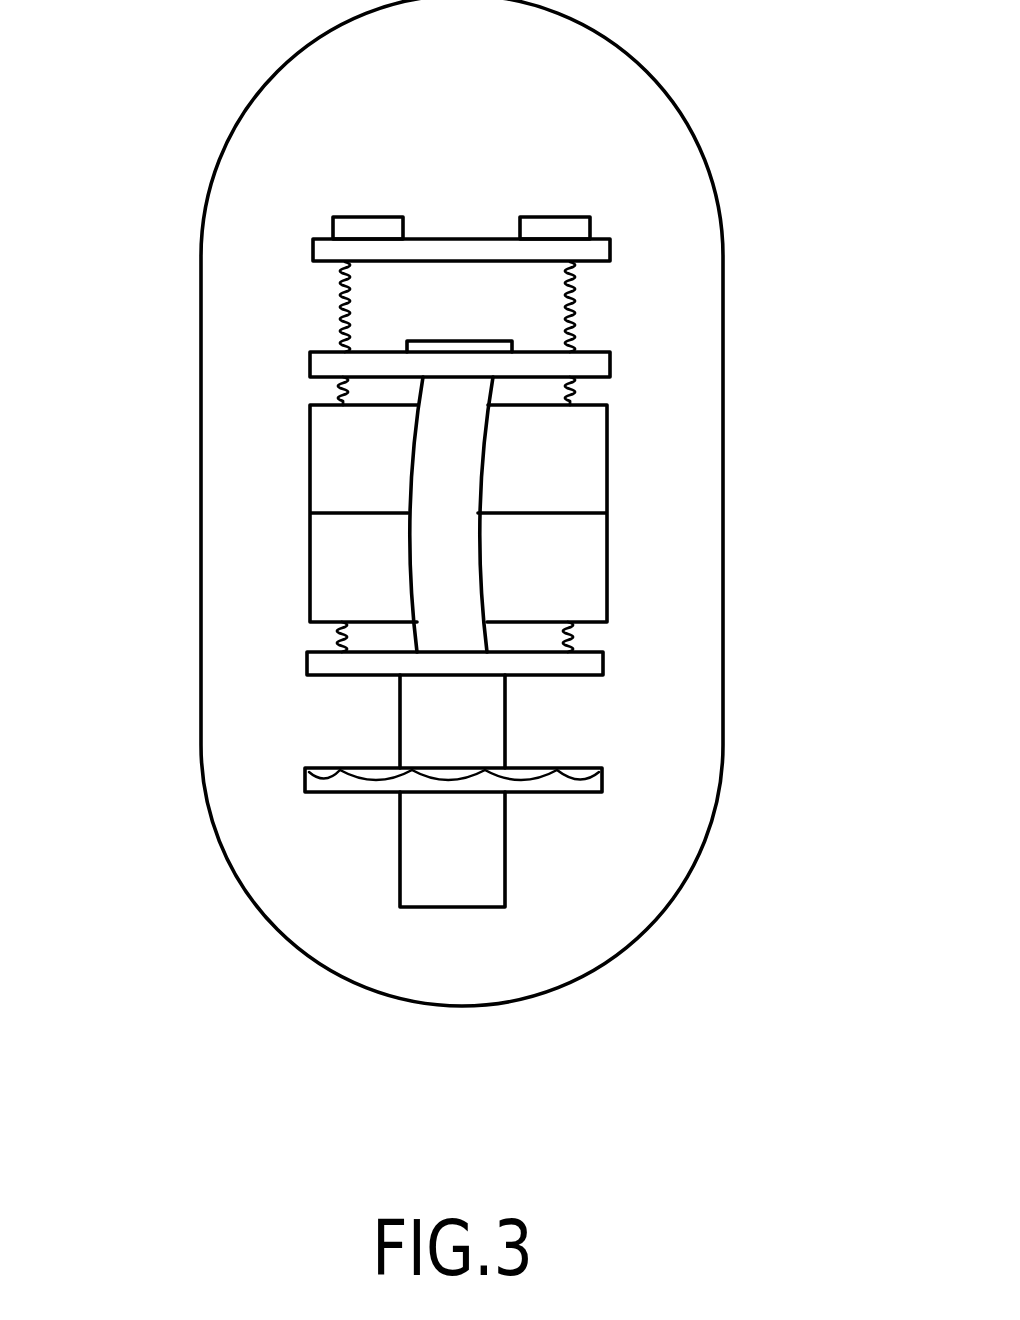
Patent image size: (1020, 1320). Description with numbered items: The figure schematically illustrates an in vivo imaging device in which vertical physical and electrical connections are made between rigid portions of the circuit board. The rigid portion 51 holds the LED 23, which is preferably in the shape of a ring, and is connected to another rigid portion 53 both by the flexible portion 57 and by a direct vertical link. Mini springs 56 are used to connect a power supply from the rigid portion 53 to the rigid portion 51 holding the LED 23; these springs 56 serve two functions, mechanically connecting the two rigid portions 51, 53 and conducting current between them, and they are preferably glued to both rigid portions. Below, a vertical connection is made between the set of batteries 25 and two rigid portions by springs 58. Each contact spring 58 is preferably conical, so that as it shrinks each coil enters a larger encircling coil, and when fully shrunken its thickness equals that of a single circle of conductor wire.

The LED 23 is at (375, 214).
The rigid portion 51 is at (610, 248).
The mini springs 56 is at (577, 310).
The rigid portion 53 is at (612, 358).
The set of batteries 25 is at (607, 450).
The flexible portion 57 is at (462, 565).
The springs 58 is at (334, 391).